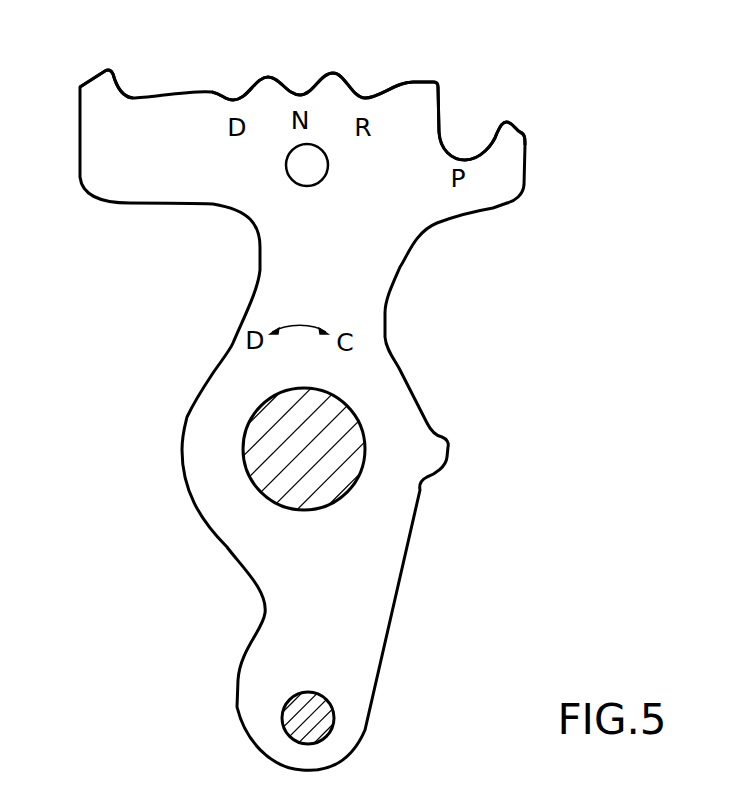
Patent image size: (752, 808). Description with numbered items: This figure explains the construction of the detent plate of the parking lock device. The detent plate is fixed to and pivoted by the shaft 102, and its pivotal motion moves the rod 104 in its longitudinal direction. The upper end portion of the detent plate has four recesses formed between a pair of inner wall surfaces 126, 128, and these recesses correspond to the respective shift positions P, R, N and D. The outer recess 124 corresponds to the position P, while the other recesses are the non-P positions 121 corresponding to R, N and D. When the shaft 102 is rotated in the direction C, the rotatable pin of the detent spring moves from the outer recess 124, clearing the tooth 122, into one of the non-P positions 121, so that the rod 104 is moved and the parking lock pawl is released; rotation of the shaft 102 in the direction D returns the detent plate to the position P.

The inner wall surface 128 is at (113, 78).
The non-P positions 121 is at (162, 70).
The tooth 122 is at (420, 92).
The outer recess 124 is at (487, 125).
The inner wall surface 126 is at (490, 123).
The shaft 102 is at (337, 468).
The rod 104 is at (313, 728).